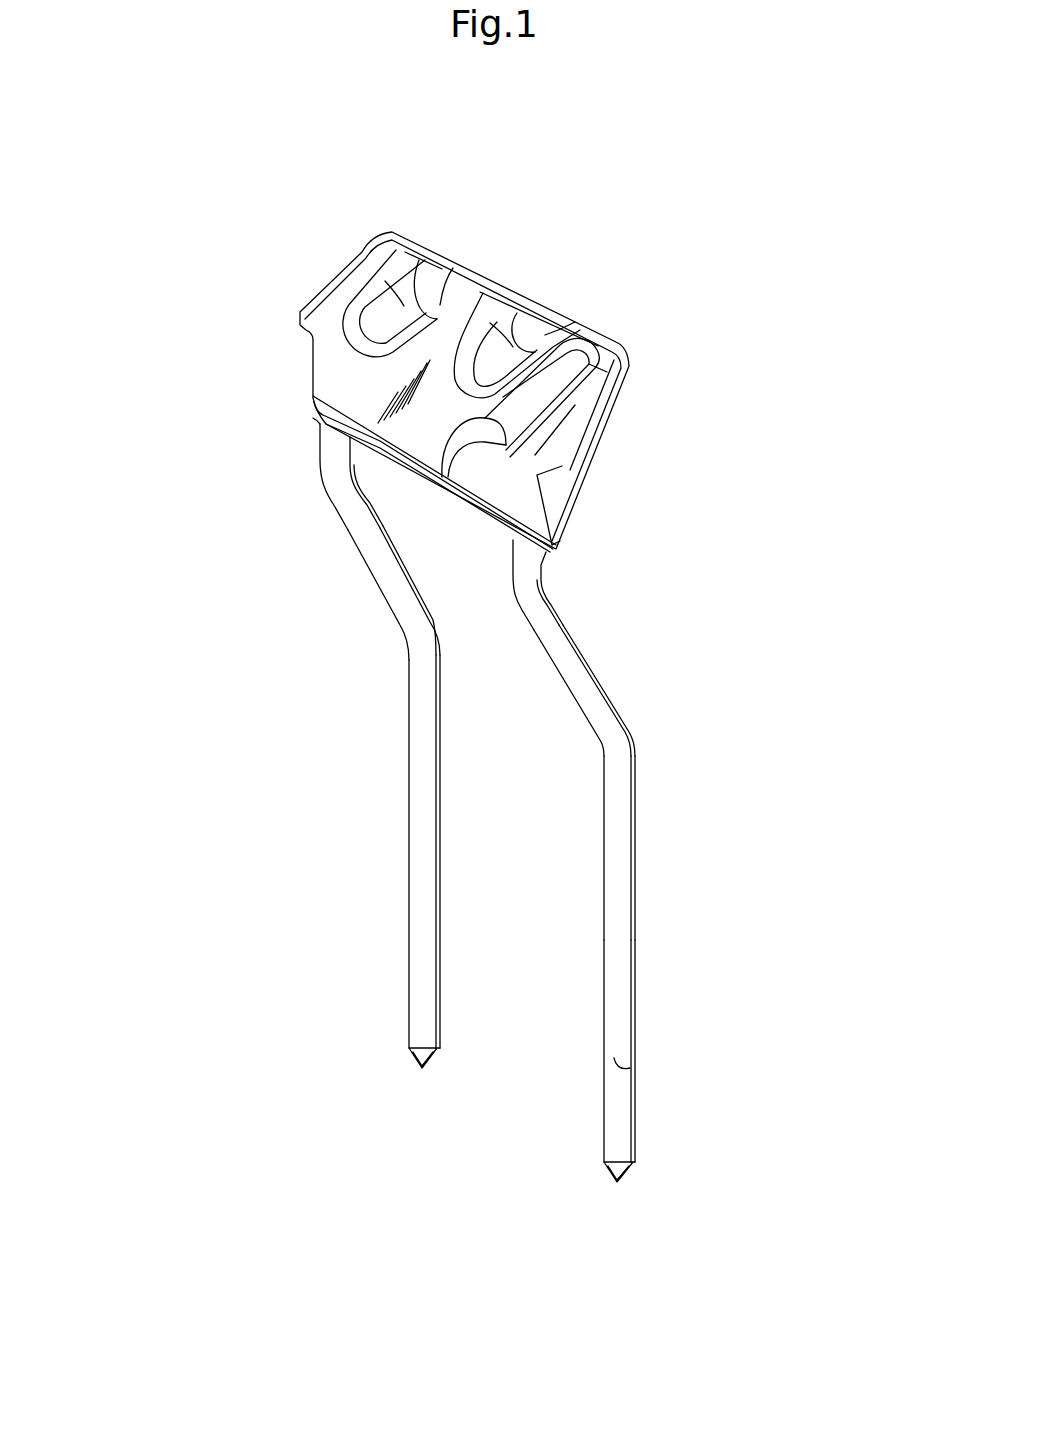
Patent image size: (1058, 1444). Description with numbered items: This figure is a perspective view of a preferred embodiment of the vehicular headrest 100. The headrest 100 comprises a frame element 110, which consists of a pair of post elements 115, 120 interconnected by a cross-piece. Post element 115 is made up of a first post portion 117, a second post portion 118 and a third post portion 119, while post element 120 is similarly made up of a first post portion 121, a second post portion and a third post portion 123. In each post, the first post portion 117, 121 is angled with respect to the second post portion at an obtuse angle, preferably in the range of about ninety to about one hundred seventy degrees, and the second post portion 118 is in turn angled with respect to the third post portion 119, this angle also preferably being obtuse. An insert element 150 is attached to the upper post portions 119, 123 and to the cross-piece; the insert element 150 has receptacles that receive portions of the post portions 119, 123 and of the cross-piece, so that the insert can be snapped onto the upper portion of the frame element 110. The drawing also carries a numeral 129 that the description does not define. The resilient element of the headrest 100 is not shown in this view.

The vehicular headrest 100 is at (683, 604).
The insert element 150 is at (370, 243).
The third post portion 119 is at (330, 451).
The second post portion 118 is at (382, 563).
The first post portion 117 is at (419, 898).
The post element 115 is at (418, 1062).
The third post portion 123 is at (565, 548).
The second leg inclined portion 129 is at (593, 687).
The frame element 110 is at (655, 833).
The first post portion 121 is at (622, 962).
The post element 120 is at (627, 1182).